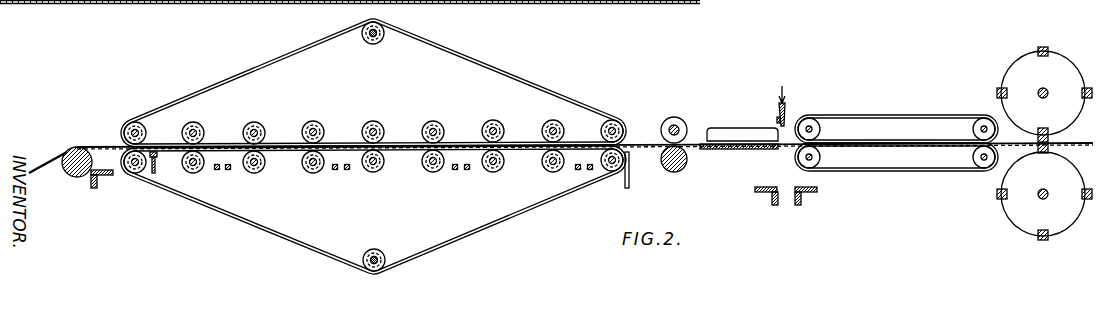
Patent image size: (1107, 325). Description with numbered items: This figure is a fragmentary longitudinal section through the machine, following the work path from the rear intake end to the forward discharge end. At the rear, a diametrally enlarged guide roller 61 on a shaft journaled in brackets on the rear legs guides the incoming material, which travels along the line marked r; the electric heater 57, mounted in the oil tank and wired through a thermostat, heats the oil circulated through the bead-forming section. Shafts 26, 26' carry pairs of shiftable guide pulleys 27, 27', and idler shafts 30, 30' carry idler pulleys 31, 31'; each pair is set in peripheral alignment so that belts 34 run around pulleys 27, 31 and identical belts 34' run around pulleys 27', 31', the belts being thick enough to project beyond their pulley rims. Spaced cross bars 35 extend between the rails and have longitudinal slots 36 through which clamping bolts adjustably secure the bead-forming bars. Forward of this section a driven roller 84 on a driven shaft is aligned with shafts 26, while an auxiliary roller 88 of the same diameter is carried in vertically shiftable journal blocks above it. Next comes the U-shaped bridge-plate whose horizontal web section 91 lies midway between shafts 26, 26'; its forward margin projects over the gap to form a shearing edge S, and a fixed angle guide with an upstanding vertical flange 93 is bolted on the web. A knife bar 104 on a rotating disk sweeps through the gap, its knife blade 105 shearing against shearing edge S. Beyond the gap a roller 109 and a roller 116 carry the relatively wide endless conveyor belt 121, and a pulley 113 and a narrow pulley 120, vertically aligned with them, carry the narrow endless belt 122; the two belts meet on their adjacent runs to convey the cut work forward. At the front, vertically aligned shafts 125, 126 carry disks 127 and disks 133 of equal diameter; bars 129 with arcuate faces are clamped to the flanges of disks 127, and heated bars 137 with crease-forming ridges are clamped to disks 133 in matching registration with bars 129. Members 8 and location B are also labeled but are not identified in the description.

The electric heater 57 is at (232, 3).
The web r is at (100, 147).
The guide roller 61 is at (72, 178).
The support bracket 8 is at (96, 189).
The belts 34' is at (373, 83).
The belts 34 is at (373, 210).
The idler shaft 30' is at (369, 46).
The idler pulleys 31' is at (396, 49).
The idler shaft 30 is at (364, 248).
The idler pulleys 31 is at (386, 244).
The guide pulleys 27' is at (391, 117).
The shaft 26' is at (403, 117).
The guide pulleys 27 is at (376, 181).
The shaft 26 is at (403, 173).
The cross bars 35 is at (230, 171).
The longitudinal slots 36 is at (220, 171).
The auxiliary roller 88 is at (680, 119).
The driven roller 84 is at (679, 171).
The vertical flange 93 is at (740, 128).
The web section 91 is at (722, 150).
The shearing edge S is at (772, 152).
The knife bar 104 is at (786, 108).
The knife blade 105 is at (778, 118).
The endless belt 122 is at (923, 115).
The endless conveyor belt 121 is at (898, 172).
The pulley 113 is at (821, 129).
The pulley 120 is at (972, 129).
The roller 109 is at (821, 157).
The roller 116 is at (972, 157).
The disks 133 is at (1022, 67).
The shaft 126 is at (1052, 81).
The horizontal bars 137 is at (1090, 90).
The bag B is at (1085, 140).
The disks 127 is at (1010, 206).
The shaft 125 is at (1038, 199).
The horizontal bars 129 is at (1092, 190).